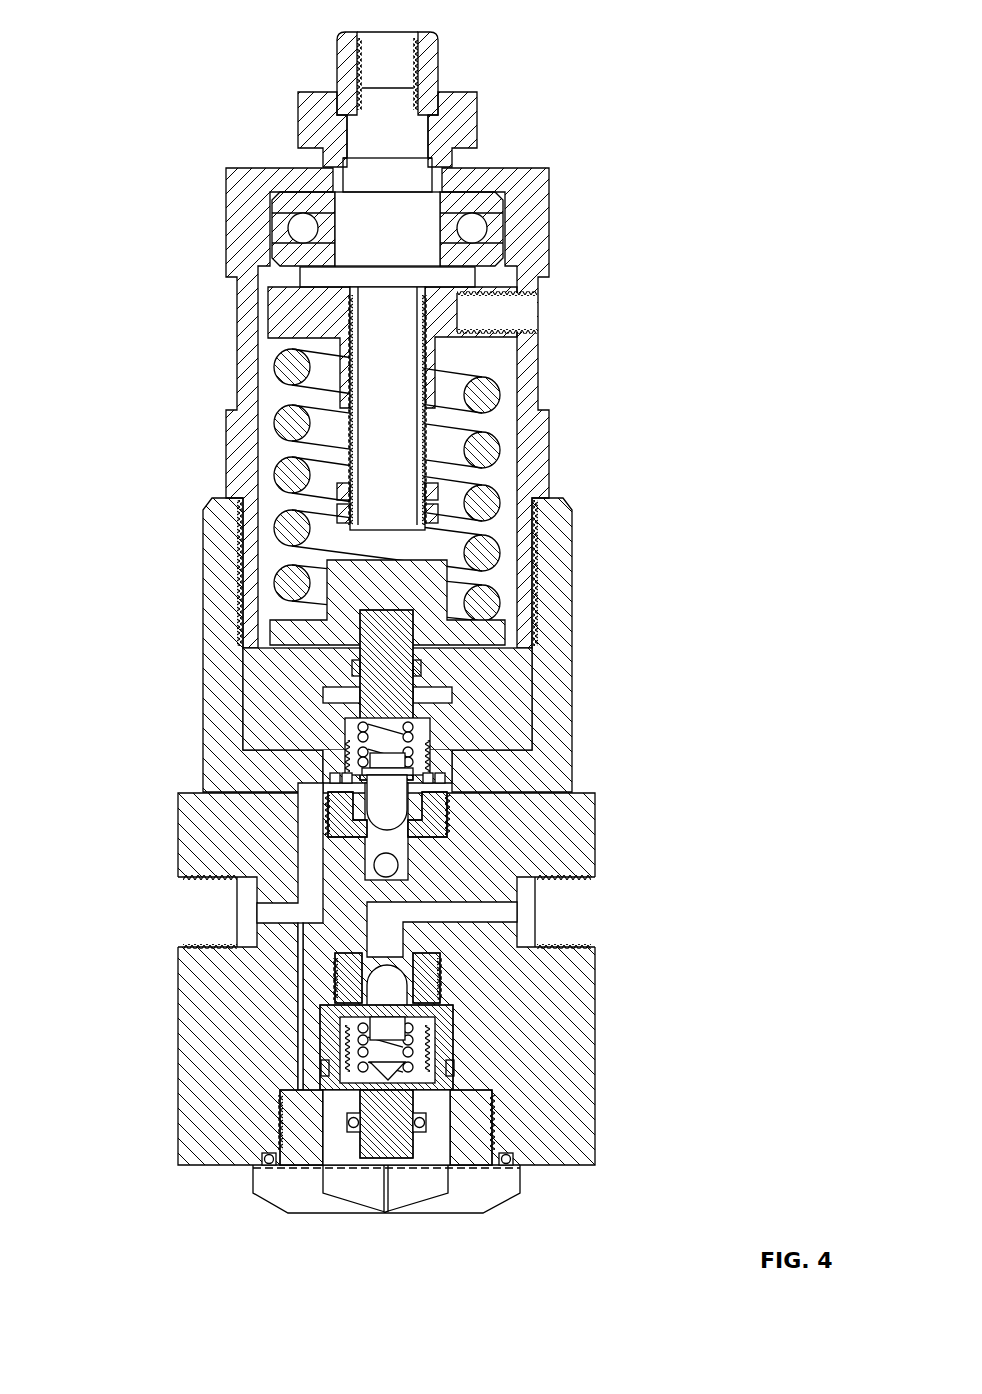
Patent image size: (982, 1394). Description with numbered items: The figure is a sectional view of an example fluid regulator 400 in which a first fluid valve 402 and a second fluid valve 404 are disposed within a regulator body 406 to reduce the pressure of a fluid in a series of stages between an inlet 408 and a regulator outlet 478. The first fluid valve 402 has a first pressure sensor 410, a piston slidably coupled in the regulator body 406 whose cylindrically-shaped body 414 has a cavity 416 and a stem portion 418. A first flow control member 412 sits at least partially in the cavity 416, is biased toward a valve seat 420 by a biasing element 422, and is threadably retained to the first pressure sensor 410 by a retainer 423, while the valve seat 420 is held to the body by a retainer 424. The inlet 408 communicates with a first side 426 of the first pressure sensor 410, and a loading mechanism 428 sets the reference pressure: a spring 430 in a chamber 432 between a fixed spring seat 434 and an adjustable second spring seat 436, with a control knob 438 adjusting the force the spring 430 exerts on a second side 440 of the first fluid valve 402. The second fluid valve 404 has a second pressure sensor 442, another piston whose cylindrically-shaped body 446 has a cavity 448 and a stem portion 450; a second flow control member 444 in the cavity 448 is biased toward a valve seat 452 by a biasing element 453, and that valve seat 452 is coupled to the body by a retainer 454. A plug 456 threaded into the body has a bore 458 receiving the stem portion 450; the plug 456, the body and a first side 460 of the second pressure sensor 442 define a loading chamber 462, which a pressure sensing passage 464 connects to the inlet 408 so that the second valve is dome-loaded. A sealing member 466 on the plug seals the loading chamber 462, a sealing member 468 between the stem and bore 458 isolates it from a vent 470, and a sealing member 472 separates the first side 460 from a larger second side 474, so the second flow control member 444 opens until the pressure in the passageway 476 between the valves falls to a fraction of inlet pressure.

The fluid regulator 400 is at (143, 45).
The first fluid valve 402 is at (517, 673).
The second fluid valve 404 is at (566, 1037).
The regulator body 406 is at (203, 540).
The inlet 408 is at (183, 912).
The first pressure sensor 410 is at (332, 767).
The first flow control member 412 is at (372, 803).
The cylindrically-shaped body 414 is at (445, 700).
The cavity 416 is at (460, 683).
The stem portion 418 is at (386, 645).
The valve seat 420 is at (386, 800).
The biasing element 422 is at (344, 758).
The retainer 423 is at (414, 738).
The retainer 424 is at (402, 765).
The first side 426 is at (330, 795).
The loading mechanism 428 is at (198, 348).
The spring 430 is at (484, 447).
The chamber 432 is at (482, 360).
The fixed spring seat 434 is at (440, 580).
The adjustable second spring seat 436 is at (285, 315).
The control knob 438 is at (478, 122).
The second side 440 is at (352, 665).
The second pressure sensor 442 is at (402, 1030).
The second flow control member 444 is at (388, 985).
The cylindrically-shaped body 446 is at (442, 1035).
The cavity 448 is at (420, 1055).
The stem portion 450 is at (350, 1125).
The valve seat 452 is at (422, 975).
The biasing element 453 is at (323, 1060).
The retainer 454 is at (432, 988).
The plug 456 is at (495, 1212).
The bore 458 is at (330, 1160).
The first side 460 is at (432, 1092).
The loading chamber 462 is at (470, 1092).
The pressure sensing passage 464 is at (298, 990).
The sealing member 466 is at (262, 1160).
The sealing member 468 is at (340, 1100).
The vent 470 is at (386, 1215).
The sealing member 472 is at (326, 1072).
The second side 474 is at (300, 995).
The passageway 476 is at (388, 865).
The regulator outlet 478 is at (595, 885).